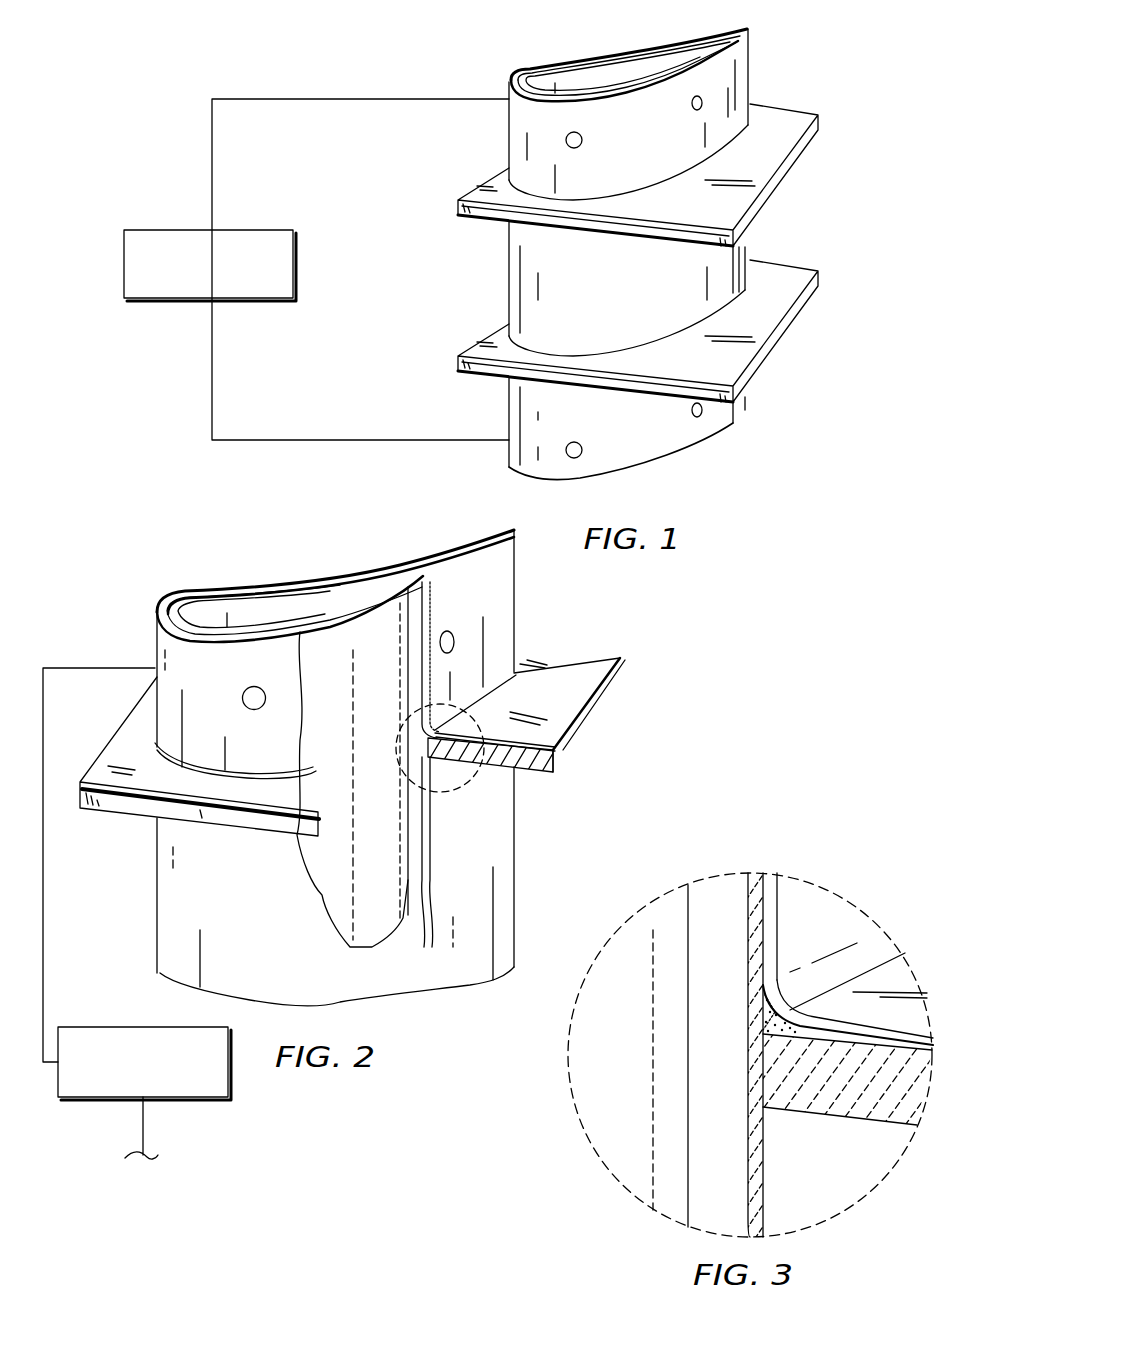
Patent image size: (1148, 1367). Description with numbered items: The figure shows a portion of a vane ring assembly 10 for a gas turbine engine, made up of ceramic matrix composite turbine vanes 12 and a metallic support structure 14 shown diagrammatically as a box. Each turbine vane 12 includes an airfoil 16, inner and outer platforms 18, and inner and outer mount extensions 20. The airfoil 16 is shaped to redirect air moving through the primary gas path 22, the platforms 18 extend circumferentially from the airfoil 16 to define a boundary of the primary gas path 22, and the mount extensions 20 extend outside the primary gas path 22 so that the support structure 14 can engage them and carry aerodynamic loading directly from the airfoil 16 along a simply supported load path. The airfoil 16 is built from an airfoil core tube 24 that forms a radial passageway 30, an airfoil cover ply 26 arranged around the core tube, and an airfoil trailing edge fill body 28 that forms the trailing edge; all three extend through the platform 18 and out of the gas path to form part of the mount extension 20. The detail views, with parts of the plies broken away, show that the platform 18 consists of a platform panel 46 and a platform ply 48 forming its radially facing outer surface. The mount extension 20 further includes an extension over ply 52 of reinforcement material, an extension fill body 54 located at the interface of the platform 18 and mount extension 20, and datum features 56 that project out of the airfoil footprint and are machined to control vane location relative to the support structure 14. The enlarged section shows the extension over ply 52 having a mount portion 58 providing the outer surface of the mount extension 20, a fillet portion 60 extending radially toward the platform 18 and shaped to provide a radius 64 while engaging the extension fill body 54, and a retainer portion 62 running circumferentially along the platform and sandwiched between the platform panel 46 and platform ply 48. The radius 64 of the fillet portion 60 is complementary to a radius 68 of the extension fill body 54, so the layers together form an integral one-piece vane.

In FIG. 1, the vane ring assembly 10 is at (847, 73).
In FIG. 1, the turbine vane 12 is at (858, 119).
In FIG. 1, the support structure 14 is at (166, 229).
In FIG. 2, the support structure 14 is at (97, 1026).
In FIG. 1, the airfoil 16 is at (768, 246).
In FIG. 2, the airfoil 16 is at (150, 882).
In FIG. 1, the platform 18 is at (826, 153).
In FIG. 2, the platform 18 is at (77, 780).
In FIG. 1, the mount extension 20 is at (755, 57).
In FIG. 2, the mount extension 20 is at (311, 572).
In FIG. 1, the primary gas path 22 is at (425, 297).
In FIG. 1, the airfoil core tube 24 is at (655, 58).
In FIG. 2, the airfoil core tube 24 is at (370, 640).
In FIG. 3, the airfoil core tube 24 is at (670, 927).
In FIG. 1, the airfoil cover ply 26 is at (720, 279).
In FIG. 2, the airfoil cover ply 26 is at (490, 810).
In FIG. 3, the airfoil cover ply 26 is at (752, 887).
In FIG. 1, the airfoil trailing edge fill body 28 is at (690, 55).
In FIG. 2, the airfoil trailing edge fill body 28 is at (424, 582).
In FIG. 3, the airfoil trailing edge fill body 28 is at (715, 897).
In FIG. 1, the passageway 30 is at (589, 86).
In FIG. 2, the passageway 30 is at (274, 603).
In FIG. 2, the platform panel 46 is at (557, 764).
In FIG. 3, the platform panel 46 is at (880, 1097).
In FIG. 2, the platform ply 48 is at (560, 711).
In FIG. 3, the platform ply 48 is at (920, 1032).
In FIG. 1, the extension over ply 52 is at (724, 122).
In FIG. 2, the extension over ply 52 is at (459, 598).
In FIG. 3, the extension over ply 52 is at (934, 903).
In FIG. 2, the extension fill body 54 is at (442, 756).
In FIG. 3, the extension fill body 54 is at (775, 1020).
In FIG. 1, the datum features 56 is at (691, 104).
In FIG. 2, the datum features 56 is at (440, 648).
In FIG. 3, the mount portion 58 is at (767, 927).
In FIG. 3, the fillet portion 60 is at (900, 957).
In FIG. 3, the retainer portion 62 is at (873, 1037).
In FIG. 3, the radius 64 is at (795, 1005).
In FIG. 3, the radius of the extension fill body 68 is at (767, 1017).